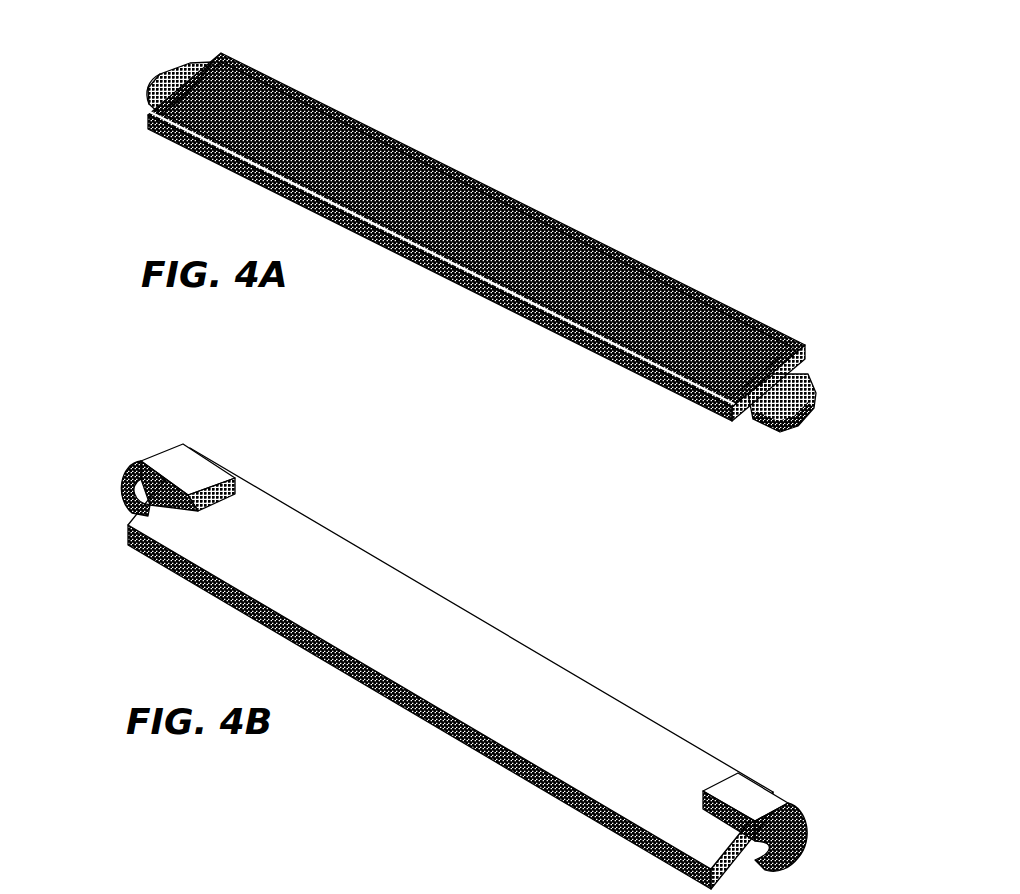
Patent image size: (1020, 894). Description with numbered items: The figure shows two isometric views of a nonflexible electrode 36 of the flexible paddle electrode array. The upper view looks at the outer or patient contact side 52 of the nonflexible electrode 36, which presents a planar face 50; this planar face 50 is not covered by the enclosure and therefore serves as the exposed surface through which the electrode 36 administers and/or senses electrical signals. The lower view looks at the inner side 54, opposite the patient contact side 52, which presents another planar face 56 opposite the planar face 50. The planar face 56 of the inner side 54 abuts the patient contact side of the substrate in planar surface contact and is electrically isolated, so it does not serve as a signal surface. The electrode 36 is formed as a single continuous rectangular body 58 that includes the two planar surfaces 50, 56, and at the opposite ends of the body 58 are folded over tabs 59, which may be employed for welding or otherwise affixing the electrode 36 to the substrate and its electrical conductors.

In FIG. 4A, the nonflexible electrode 36 is at (878, 168).
In FIG. 4B, the nonflexible electrode 36 is at (848, 671).
In FIG. 4A, the planar face 50 is at (457, 190).
In FIG. 4A, the patient contact side 52 is at (621, 148).
In FIG. 4B, the inner side 54 is at (518, 556).
In FIG. 4B, the planar face 56 is at (313, 553).
In FIG. 4A, the rectangular body 58 is at (676, 383).
In FIG. 4B, the rectangular body 58 is at (405, 704).
In FIG. 4A, the folded over tabs 59 is at (157, 63).
In FIG. 4B, the folded over tabs 59 is at (176, 452).